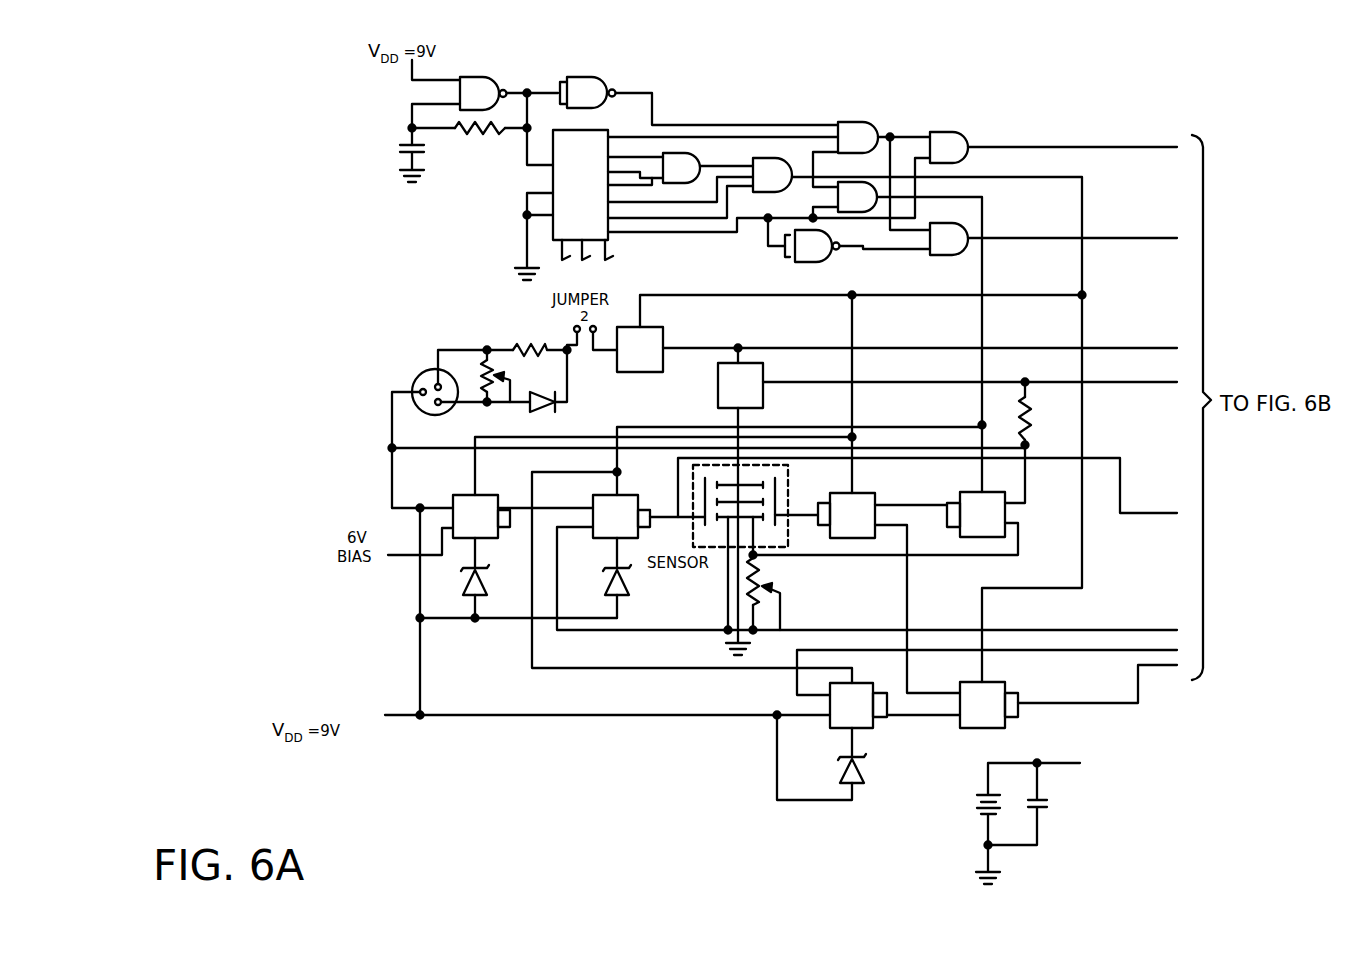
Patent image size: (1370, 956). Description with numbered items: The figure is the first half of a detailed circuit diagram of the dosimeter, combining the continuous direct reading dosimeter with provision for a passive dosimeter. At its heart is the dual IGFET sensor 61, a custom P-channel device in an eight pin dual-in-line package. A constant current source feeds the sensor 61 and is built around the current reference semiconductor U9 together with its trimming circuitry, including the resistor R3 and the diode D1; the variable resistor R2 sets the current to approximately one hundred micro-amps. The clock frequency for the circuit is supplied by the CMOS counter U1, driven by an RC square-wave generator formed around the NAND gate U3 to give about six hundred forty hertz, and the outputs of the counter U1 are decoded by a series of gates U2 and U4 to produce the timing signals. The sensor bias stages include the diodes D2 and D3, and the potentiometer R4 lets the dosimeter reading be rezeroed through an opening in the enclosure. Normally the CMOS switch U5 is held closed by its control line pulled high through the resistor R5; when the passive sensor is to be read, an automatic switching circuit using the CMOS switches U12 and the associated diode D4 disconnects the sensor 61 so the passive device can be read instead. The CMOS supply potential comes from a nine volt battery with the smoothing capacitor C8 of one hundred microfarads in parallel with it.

The IGFET sensor 61 is at (790, 496).
The CMOS counter U1 is at (564, 205).
The gate U2 is at (872, 402).
The NAND gate U3 is at (695, 169).
The gate U4 is at (1007, 312).
The CMOS switch U5 is at (897, 474).
The current reference semiconductor U9 is at (461, 429).
The CMOS switch U12 is at (1003, 696).
The variable resistor R2 is at (498, 376).
The resistor R3 is at (527, 341).
The potentiometer R4 is at (764, 594).
The resistor R5 is at (1037, 413).
The diode D1 is at (548, 393).
The diode D2 is at (486, 578).
The diode D3 is at (628, 578).
The diode D4 is at (833, 757).
The smoothing capacitor C8 is at (1044, 821).